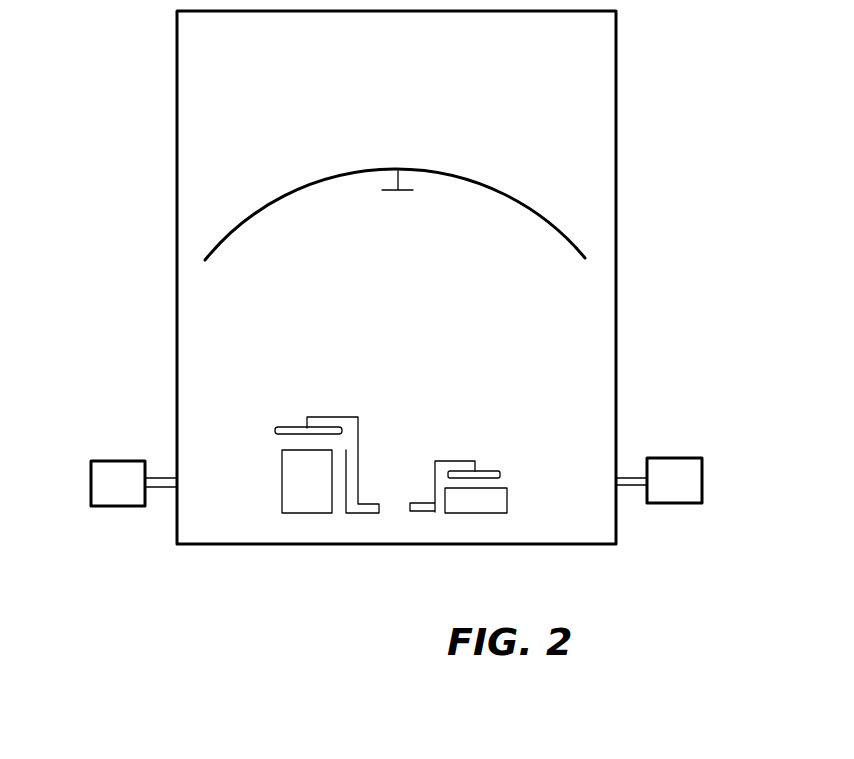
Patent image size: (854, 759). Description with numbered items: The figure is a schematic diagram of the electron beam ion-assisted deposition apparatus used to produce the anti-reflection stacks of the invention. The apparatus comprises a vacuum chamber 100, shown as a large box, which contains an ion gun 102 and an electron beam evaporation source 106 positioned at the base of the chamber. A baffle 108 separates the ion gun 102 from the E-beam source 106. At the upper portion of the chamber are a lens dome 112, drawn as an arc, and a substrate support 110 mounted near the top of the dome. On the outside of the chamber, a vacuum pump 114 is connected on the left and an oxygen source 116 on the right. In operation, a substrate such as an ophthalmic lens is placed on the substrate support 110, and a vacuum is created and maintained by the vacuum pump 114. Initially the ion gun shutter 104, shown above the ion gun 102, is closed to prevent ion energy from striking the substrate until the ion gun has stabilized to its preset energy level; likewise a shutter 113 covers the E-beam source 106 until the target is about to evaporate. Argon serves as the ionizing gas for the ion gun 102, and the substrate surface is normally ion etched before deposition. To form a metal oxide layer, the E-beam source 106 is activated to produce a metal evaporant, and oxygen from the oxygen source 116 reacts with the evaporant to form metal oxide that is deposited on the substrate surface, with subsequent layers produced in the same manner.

The vacuum chamber 100 is at (616, 303).
The ion gun 102 is at (281, 493).
The ion gun shutter 104 is at (291, 428).
The electron beam evaporation source 106 is at (508, 498).
The baffle 108 is at (345, 507).
The substrate support 110 is at (385, 190).
The lens dome 112 is at (450, 173).
The shutter 113 is at (492, 470).
The vacuum pump 114 is at (110, 460).
The oxygen source 116 is at (682, 457).